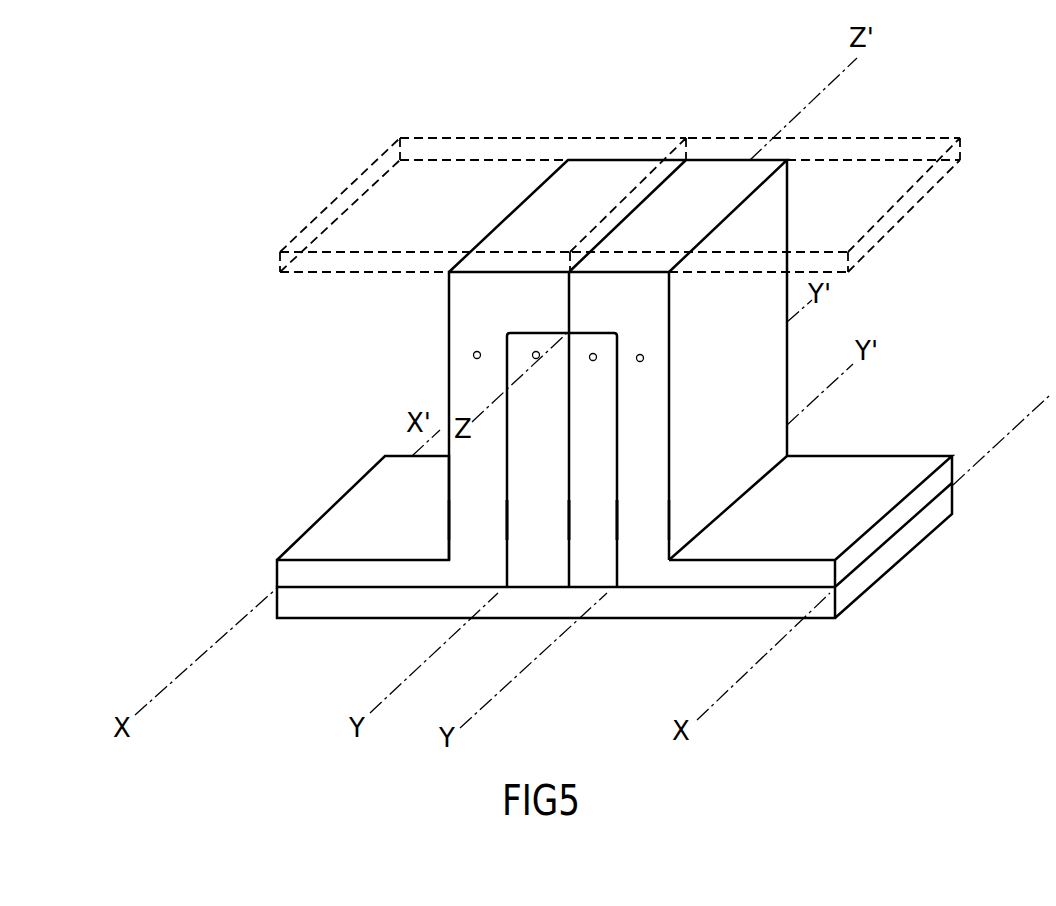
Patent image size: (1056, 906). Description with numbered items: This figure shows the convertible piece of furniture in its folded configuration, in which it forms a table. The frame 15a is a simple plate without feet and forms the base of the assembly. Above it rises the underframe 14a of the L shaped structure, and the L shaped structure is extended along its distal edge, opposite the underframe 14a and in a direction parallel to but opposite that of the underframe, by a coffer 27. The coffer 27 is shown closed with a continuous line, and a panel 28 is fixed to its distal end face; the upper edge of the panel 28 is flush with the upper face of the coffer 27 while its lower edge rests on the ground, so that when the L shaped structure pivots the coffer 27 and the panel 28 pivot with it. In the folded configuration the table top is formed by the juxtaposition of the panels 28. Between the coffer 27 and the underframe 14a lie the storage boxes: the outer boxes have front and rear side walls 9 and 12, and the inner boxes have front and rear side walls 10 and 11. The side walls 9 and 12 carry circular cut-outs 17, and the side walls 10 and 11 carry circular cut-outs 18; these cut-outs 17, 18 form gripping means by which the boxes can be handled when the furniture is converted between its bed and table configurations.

The front side wall 9 is at (494, 520).
The front side wall 10 is at (560, 520).
The rear side wall 11 is at (608, 520).
The rear side wall 12 is at (661, 520).
The underframe 14a is at (340, 533).
The frame 15a is at (662, 608).
The circular cut-out 17 is at (473, 357).
The circular cut-out 18 is at (537, 359).
The coffer 27 is at (632, 300).
The panel 28 is at (453, 180).